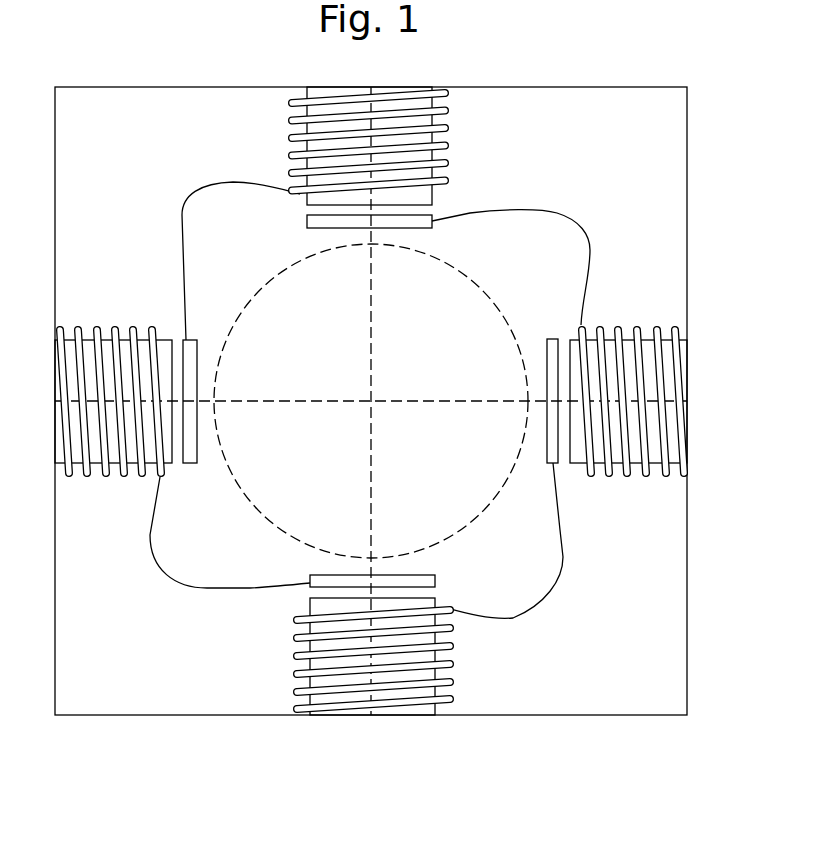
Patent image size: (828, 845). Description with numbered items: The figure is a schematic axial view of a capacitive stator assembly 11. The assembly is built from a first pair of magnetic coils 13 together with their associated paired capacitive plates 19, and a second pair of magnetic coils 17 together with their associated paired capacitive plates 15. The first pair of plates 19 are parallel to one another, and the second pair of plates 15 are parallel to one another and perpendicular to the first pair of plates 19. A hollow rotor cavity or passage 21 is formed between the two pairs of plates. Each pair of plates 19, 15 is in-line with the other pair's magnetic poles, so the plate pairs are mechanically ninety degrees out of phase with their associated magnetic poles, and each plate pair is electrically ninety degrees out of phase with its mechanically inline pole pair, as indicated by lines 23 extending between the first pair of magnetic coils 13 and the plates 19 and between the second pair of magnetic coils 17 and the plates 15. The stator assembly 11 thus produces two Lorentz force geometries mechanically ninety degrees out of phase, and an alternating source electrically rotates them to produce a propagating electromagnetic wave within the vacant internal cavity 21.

The capacitive stator assembly 11 is at (600, 45).
The first pair of magnetic coils 13 is at (152, 323).
The second pair of capacitive plates 15 is at (190, 463).
The second pair of magnetic coils 17 is at (445, 145).
The first pair of capacitive plates 19 is at (308, 222).
The hollow rotor cavity 21 is at (318, 357).
The lines 23 is at (182, 232).